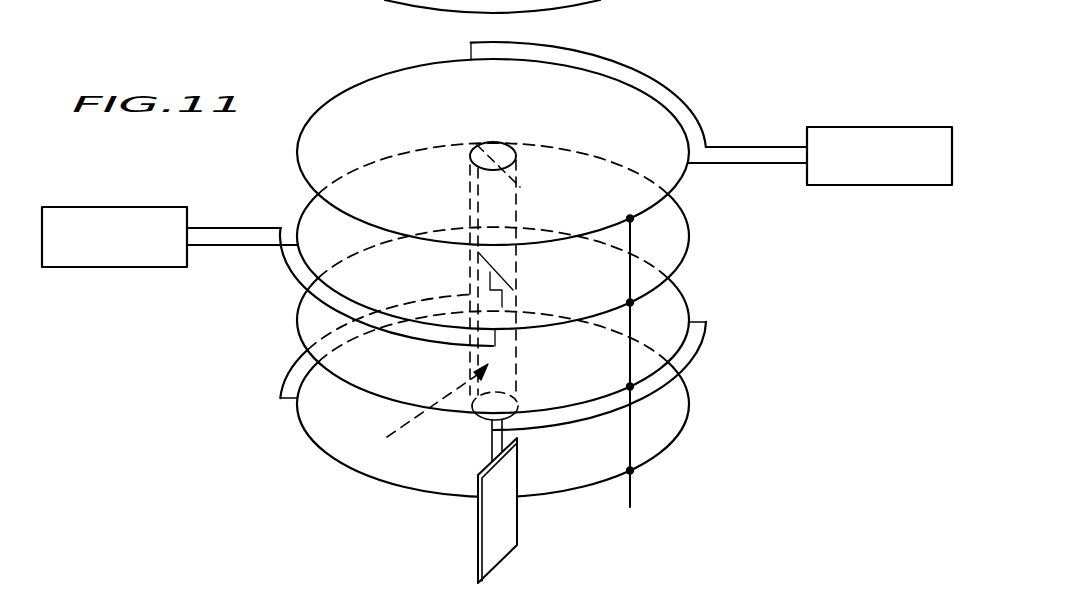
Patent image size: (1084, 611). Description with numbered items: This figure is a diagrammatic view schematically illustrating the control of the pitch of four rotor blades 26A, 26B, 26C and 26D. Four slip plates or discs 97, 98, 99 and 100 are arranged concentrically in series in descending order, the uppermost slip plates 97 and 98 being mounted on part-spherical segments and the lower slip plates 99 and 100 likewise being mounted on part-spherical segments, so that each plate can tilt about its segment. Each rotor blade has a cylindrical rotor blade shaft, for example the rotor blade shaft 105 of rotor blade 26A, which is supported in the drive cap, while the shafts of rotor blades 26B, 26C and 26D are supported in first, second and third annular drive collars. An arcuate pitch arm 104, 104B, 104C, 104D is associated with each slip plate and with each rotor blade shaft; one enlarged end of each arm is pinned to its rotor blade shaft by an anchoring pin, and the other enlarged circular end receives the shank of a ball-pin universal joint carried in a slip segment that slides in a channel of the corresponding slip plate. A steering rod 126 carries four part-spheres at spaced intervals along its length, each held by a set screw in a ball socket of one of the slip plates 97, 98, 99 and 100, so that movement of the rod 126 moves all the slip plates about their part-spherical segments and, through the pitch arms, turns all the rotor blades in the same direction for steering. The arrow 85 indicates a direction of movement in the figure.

The slip plate 97 is at (433, 77).
The slip plate 98 is at (678, 232).
The slip plate 99 is at (672, 302).
The slip plate 100 is at (673, 422).
The arcuate pitch arm 104 is at (690, 103).
The arcuate pitch arm 104B is at (293, 278).
The arcuate pitch arm 104C is at (707, 340).
The arcuate pitch arm 104D is at (287, 370).
The rotor blade shaft 105 is at (762, 146).
The rotor blade 26A is at (873, 137).
The rotor blade 26B is at (135, 217).
The rotor blade 26C is at (507, 525).
The rotor blade 26D is at (505, 197).
The steering rod 126 is at (627, 268).
The direction arrow 85 is at (422, 408).